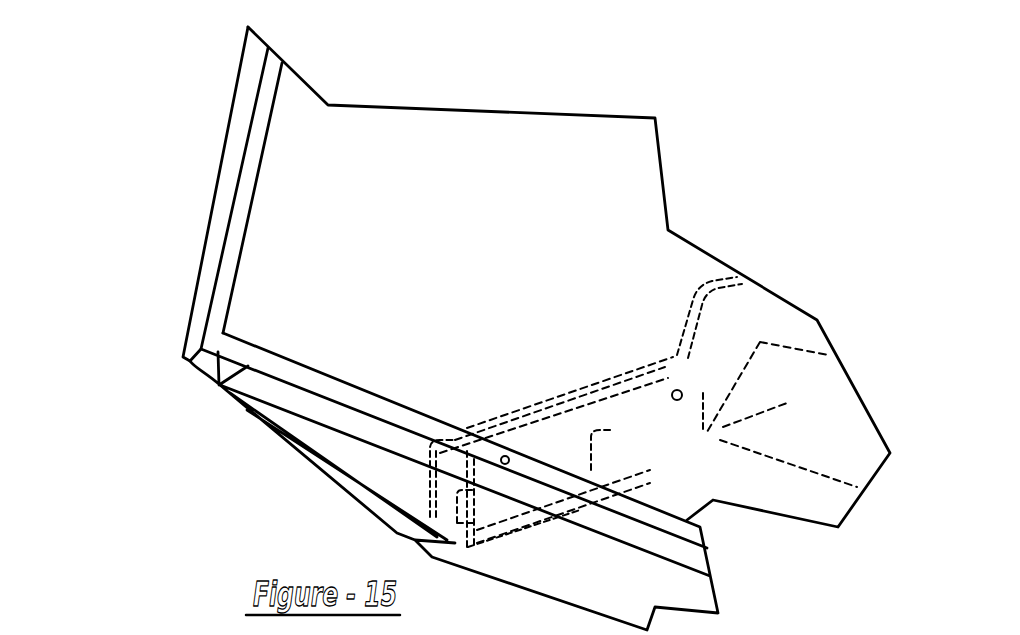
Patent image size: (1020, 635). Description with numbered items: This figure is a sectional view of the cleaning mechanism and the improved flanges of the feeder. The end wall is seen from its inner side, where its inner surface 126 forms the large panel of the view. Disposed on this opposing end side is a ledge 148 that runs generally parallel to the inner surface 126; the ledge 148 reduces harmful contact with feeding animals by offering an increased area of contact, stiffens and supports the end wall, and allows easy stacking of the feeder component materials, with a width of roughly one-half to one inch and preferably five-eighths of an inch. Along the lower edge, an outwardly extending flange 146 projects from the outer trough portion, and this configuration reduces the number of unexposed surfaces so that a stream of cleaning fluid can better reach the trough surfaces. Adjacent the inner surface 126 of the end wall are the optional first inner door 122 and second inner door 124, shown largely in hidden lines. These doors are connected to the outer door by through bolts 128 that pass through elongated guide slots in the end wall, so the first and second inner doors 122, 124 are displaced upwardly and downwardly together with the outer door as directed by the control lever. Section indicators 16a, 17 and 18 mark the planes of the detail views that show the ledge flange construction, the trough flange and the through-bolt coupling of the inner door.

The inner surface 126 is at (575, 125).
The ledge 148 is at (227, 278).
The outwardly extending flange 146 is at (293, 373).
The through bolt 128 is at (682, 388).
The first inner door 122 is at (700, 389).
The second inner door 124 is at (690, 436).
The section line 16a is at (190, 220).
The section line 17 is at (465, 347).
The section line 18 is at (673, 350).